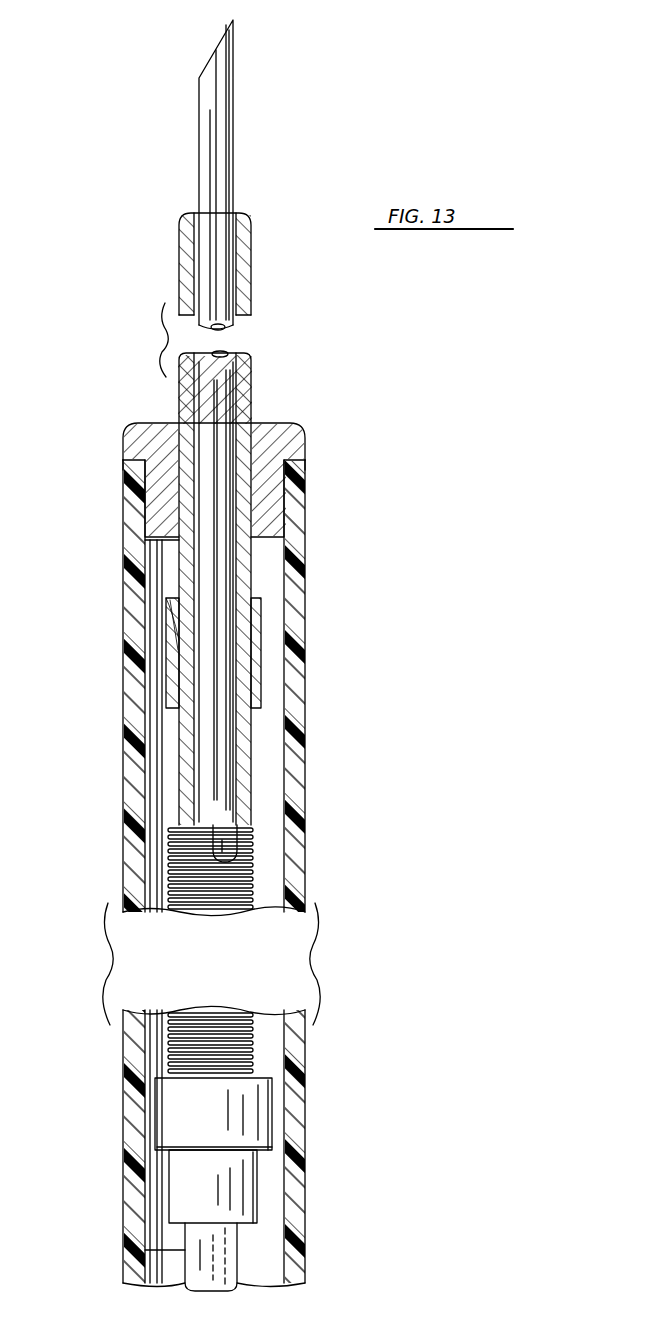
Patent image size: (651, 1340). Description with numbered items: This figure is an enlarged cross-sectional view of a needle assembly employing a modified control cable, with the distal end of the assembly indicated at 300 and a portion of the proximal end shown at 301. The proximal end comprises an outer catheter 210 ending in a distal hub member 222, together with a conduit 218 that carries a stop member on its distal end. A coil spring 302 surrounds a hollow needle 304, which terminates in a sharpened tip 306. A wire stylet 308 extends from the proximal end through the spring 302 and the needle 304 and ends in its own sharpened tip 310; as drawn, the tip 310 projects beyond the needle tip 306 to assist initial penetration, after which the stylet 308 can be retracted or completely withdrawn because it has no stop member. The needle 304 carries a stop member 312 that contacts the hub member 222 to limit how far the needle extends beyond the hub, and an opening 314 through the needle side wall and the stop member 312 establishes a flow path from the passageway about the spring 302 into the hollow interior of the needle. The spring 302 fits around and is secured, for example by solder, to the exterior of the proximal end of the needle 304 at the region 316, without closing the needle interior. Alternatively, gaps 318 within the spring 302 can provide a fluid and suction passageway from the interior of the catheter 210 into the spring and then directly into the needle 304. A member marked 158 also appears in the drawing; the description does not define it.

The sharpened tip 310 is at (208, 60).
The sharpened tip 306 is at (248, 222).
The wire stylet 308 is at (235, 368).
The distal hub member 222 is at (305, 440).
The outer catheter 210 is at (293, 718).
The hollow needle 304 is at (178, 788).
The side wall opening 314 is at (185, 680).
The stop member 312 is at (253, 660).
The proximal end of needle 316 is at (264, 848).
The gaps 318 is at (250, 1050).
The coil spring 302 is at (158, 1052).
The plug 158 is at (197, 1119).
The conduit 218 is at (185, 1250).
The distal end of needle assembly 300 is at (350, 574).
The proximal end of needle assembly 301 is at (410, 1116).